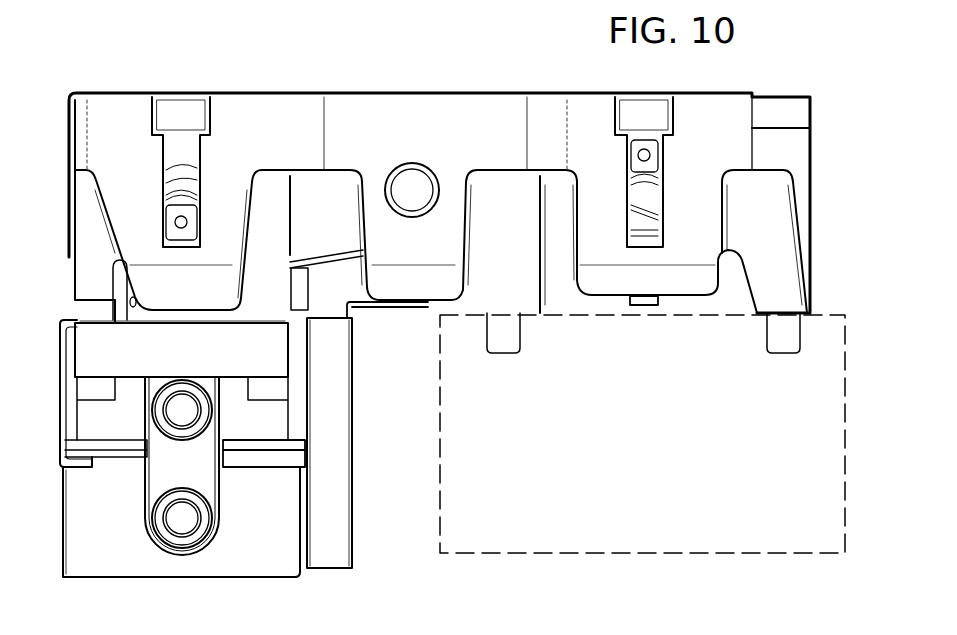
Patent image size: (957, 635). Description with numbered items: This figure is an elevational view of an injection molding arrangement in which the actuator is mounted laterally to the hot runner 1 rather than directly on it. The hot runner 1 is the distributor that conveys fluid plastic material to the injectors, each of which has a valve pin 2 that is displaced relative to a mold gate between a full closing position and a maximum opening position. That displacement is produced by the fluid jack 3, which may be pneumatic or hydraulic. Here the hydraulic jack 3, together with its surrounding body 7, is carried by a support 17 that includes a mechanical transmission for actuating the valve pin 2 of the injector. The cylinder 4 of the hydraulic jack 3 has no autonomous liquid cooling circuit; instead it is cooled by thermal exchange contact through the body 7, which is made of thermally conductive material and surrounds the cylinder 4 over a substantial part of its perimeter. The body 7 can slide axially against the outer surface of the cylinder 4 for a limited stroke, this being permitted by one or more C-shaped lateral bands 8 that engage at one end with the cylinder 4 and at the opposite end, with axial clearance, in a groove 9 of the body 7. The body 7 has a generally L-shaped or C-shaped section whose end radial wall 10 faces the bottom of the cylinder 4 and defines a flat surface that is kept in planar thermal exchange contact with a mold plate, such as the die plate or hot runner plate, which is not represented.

The hot runner 1 is at (820, 520).
The valve pin 2 is at (638, 305).
The fluid jack 3 is at (97, 431).
The cylinder 4 is at (165, 462).
The body 7 is at (58, 501).
The C-shaped lateral band 8 is at (59, 342).
The groove 9 is at (245, 458).
The end radial wall 10 is at (228, 577).
The support 17 is at (448, 93).